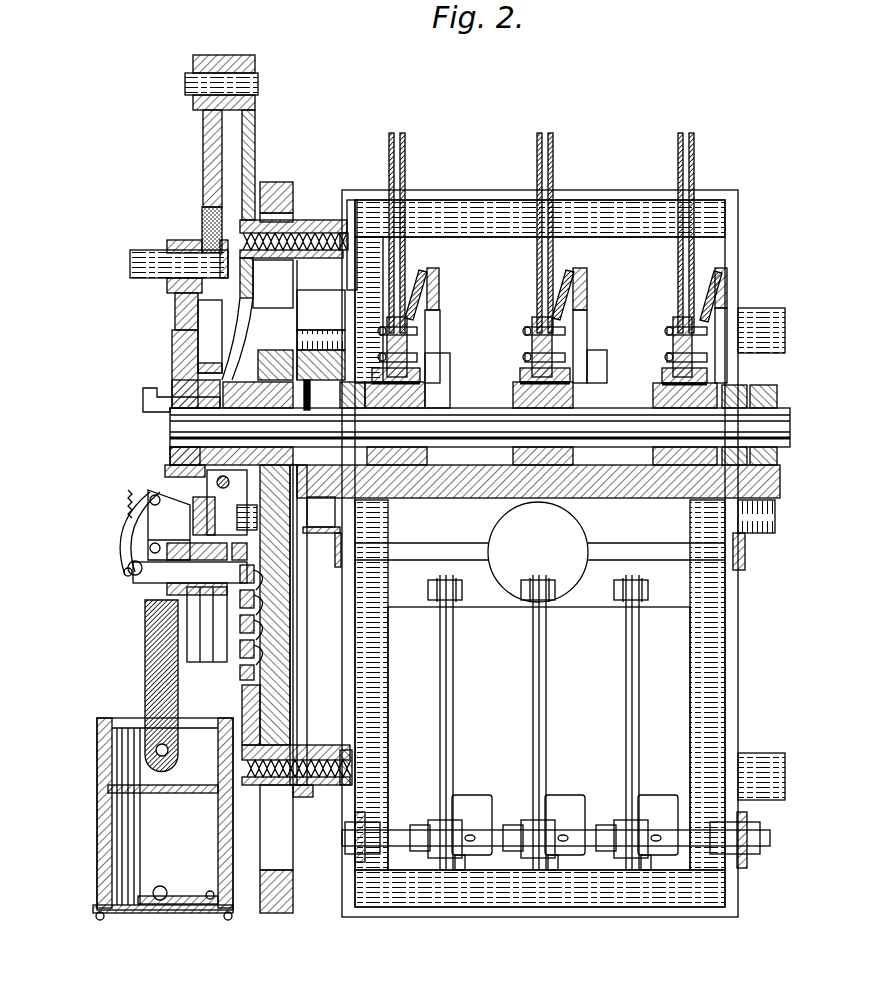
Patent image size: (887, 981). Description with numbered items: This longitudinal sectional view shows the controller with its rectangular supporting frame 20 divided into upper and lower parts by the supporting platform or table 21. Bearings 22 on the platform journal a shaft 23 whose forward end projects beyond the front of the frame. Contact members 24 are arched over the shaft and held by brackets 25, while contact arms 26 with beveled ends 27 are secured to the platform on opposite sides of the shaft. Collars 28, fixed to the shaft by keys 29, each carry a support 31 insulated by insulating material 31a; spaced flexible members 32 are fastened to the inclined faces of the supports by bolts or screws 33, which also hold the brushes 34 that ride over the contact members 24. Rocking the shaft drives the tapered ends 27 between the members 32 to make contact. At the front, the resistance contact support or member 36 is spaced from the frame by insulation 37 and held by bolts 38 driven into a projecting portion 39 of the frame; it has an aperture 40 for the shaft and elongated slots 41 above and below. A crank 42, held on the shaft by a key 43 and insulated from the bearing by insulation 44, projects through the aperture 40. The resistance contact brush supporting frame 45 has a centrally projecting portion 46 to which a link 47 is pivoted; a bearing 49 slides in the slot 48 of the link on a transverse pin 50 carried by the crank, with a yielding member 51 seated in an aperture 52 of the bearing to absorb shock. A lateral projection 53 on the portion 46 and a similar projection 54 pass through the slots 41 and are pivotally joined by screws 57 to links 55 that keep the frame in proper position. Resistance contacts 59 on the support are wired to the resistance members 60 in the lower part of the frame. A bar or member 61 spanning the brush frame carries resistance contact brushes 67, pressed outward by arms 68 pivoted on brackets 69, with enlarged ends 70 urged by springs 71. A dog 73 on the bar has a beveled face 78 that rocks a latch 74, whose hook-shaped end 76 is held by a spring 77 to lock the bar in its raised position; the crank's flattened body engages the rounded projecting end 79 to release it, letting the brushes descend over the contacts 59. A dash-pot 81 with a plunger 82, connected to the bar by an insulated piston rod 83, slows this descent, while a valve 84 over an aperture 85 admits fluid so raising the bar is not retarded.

The supporting frame 20 is at (596, 198).
The supporting platform or table 21 is at (688, 490).
The bearings 22 is at (355, 470).
The shaft 23 is at (647, 425).
The contact members 24 is at (418, 300).
The brackets 25 is at (175, 452).
The contact arms 26 is at (405, 300).
The beveled or tapered ends 27 is at (535, 205).
The collars 28 is at (415, 455).
The keys 29 is at (440, 395).
The support 31 is at (385, 330).
The insulating material 31a is at (520, 375).
The flexible members 32 is at (392, 150).
The bolts or screws 33 is at (385, 330).
The flexible members or brushes 34 is at (430, 285).
The resistance contact support or member 36 is at (276, 182).
The insulation 37 is at (278, 262).
The bolts or screws 38 is at (274, 344).
The projecting portion 39 is at (345, 740).
The aperture 40 is at (480, 427).
The elongated slots or apertures 41 is at (298, 222).
The crank 42 is at (175, 352).
The key 43 is at (145, 395).
The insulation 44 is at (325, 408).
The resistance contact brush supporting frame 45 is at (321, 339).
The centrally projecting portion 46 is at (257, 145).
The link 47 is at (203, 150).
The slot or elongated aperture 48 is at (190, 330).
The bearing 49 is at (175, 297).
The transverse pin or axle 50 is at (150, 255).
The yielding member 51 is at (202, 215).
The aperture 52 is at (200, 230).
The lateral projection 53 is at (352, 200).
The projection 54 is at (284, 792).
The links 55 is at (262, 700).
The screws or bolts 57 is at (345, 258).
The resistance contacts 59 is at (258, 650).
The resistance members 60 is at (452, 730).
The bar or member 61 is at (187, 600).
The resistance contact brushes 67 is at (190, 573).
The arms 68 is at (125, 525).
The brackets 69 is at (205, 485).
The enlarged ends 70 is at (130, 572).
The yielding members 71 is at (128, 494).
The dog 73 is at (124, 572).
The latch 74 is at (165, 470).
The hook-shaped end of latch 76 is at (232, 625).
The yielding member 77 is at (260, 520).
The beveled face of dog 78 is at (148, 540).
The projecting extremity of latch 79 is at (205, 478).
The dash-pot 81 is at (112, 828).
The plunger 82 is at (125, 748).
The insulated piston rod 83 is at (145, 665).
The valve 84 is at (190, 895).
The aperture 85 is at (160, 914).